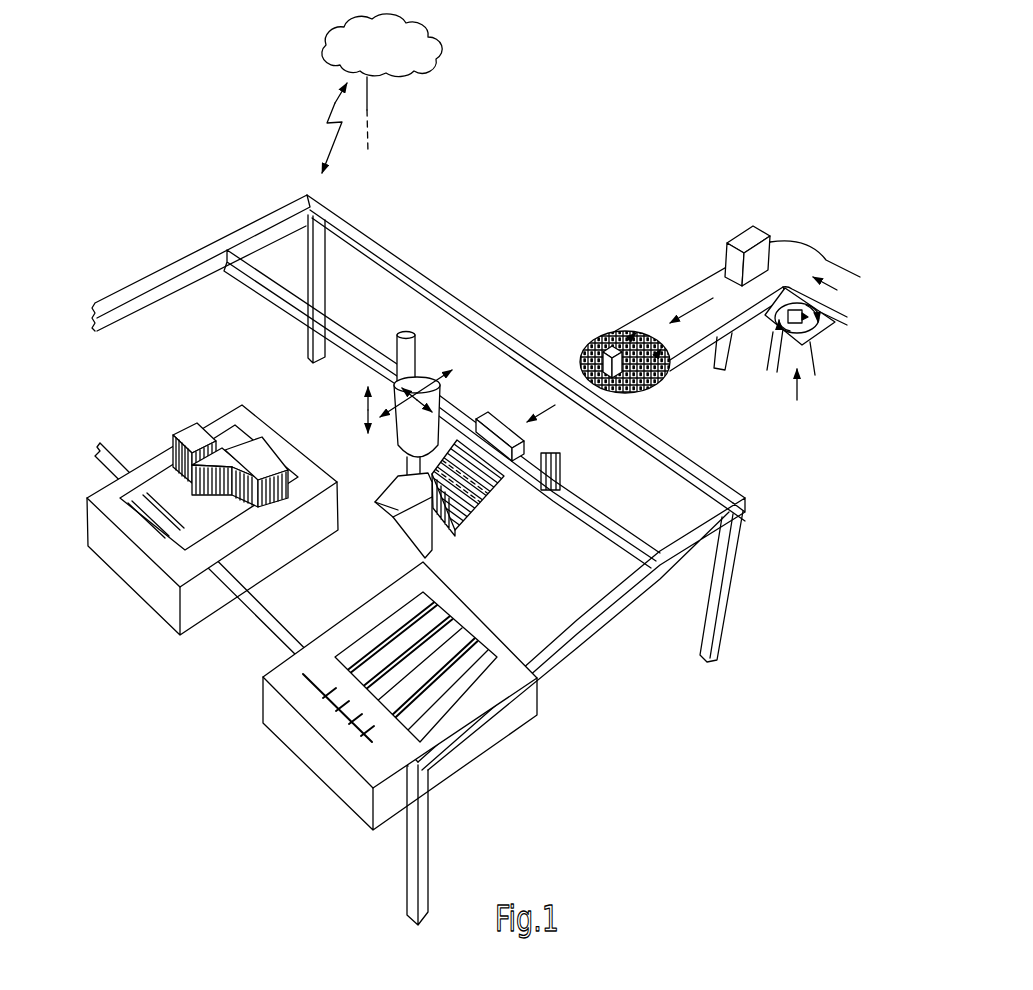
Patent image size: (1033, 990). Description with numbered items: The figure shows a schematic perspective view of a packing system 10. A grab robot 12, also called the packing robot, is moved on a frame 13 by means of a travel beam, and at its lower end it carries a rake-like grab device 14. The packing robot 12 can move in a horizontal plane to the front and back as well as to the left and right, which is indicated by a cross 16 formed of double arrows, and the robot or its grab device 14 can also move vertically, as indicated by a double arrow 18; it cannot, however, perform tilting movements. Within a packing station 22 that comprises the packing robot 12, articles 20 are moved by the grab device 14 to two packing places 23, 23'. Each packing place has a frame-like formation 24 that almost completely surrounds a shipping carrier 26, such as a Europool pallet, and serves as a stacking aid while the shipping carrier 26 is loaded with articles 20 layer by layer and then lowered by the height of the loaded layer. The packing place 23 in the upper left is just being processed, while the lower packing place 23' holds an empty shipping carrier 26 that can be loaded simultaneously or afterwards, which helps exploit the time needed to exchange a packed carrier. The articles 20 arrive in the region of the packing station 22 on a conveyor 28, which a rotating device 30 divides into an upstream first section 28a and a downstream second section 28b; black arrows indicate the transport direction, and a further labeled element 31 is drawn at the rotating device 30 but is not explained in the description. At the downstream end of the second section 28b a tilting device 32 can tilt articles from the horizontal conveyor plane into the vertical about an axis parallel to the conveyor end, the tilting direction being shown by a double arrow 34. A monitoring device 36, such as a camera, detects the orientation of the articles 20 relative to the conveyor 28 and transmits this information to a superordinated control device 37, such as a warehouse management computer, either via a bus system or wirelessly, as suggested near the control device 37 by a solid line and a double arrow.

The system 10 is at (513, 175).
The grab robot 12 is at (427, 353).
The frame 13 is at (627, 605).
The grab device 14 is at (403, 533).
The cross formed of double arrows 16 is at (437, 387).
The double arrow 18 is at (357, 417).
The articles 20 is at (177, 433).
The packing station 22 is at (192, 225).
The packing place 23 is at (212, 552).
The packing place 23' is at (281, 811).
The frame-like formation 24 is at (265, 695).
The shipping carrier 26 is at (457, 645).
The conveyor 28 is at (826, 248).
The first section 28a is at (692, 275).
The second section 28b is at (575, 440).
The rotating device 30 is at (661, 398).
The rotary table 31 is at (590, 345).
The tilting device 32 is at (465, 530).
The double arrow 34 is at (477, 494).
The monitoring device 36 is at (800, 383).
The control device 37 is at (403, 52).